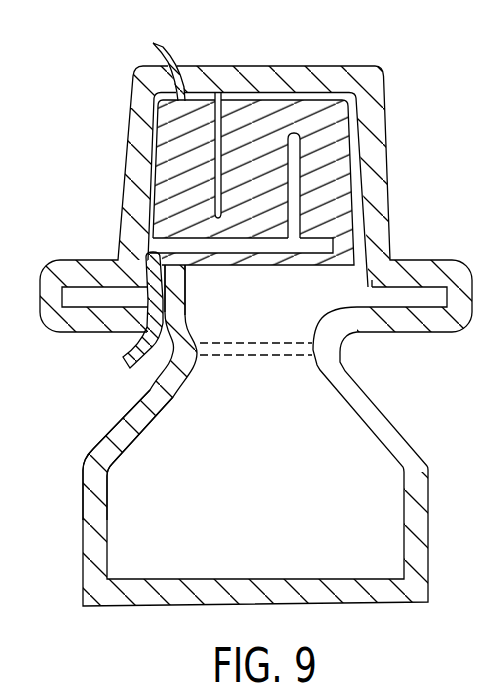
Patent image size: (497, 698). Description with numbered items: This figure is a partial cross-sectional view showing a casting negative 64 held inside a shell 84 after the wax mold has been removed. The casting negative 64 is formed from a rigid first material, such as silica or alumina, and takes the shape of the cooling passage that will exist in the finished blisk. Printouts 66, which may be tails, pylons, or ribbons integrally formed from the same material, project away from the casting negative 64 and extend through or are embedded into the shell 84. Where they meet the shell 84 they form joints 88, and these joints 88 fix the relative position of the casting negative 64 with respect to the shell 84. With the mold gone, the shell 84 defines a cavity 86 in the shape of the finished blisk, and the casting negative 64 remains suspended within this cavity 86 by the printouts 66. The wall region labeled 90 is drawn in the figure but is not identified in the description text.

The casting negative 64 is at (342, 161).
The printout 66 is at (172, 53).
The shell 84 is at (366, 76).
The cavity 86 is at (303, 308).
The joint 88 is at (180, 83).
The container wall 90 is at (133, 444).